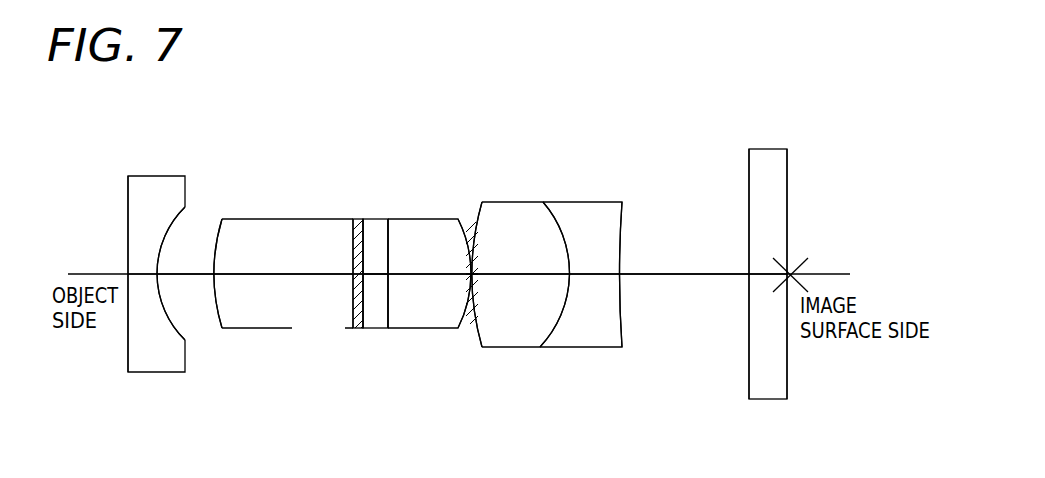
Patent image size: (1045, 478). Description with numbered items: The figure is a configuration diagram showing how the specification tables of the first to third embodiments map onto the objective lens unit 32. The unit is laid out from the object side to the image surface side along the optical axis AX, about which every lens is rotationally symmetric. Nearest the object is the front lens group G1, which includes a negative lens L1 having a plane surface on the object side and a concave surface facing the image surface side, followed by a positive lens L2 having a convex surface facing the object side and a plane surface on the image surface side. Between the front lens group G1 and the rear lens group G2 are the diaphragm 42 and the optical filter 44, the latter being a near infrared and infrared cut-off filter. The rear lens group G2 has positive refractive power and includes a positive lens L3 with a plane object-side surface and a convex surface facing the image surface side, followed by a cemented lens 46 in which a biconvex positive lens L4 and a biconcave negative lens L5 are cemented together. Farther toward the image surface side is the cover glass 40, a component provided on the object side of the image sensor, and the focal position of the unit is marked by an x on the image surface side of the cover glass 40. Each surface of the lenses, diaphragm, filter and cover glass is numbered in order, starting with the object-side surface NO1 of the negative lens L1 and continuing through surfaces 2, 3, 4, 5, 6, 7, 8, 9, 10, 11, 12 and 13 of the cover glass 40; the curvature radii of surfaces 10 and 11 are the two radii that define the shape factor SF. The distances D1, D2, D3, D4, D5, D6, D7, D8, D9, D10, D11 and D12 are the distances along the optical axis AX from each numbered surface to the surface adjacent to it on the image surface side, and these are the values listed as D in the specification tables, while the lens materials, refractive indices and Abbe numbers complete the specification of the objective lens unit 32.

The objective lens unit 32 is at (603, 107).
The cover glass 40 is at (765, 149).
The diaphragm 42 is at (356, 219).
The optical filter 44 is at (386, 219).
The cemented lens 46 is at (554, 257).
The negative lens L1 is at (153, 176).
The positive lens L2 is at (282, 219).
The positive lens L3 is at (431, 219).
The positive lens L4 is at (512, 202).
The negative lens L5 is at (583, 202).
The front lens group G1 is at (214, 285).
The rear lens group G2 is at (483, 278).
The optical axis AX is at (830, 273).
The surface number 1 NO1 is at (128, 367).
The surface number 2 is at (188, 340).
The surface number 3 is at (222, 315).
The surface number 4 is at (355, 328).
The surface number 5 is at (360, 328).
The surface number 6 is at (384, 328).
The surface number 7 is at (389, 328).
The surface number 8 is at (462, 328).
The surface number 9 is at (481, 347).
The surface number 10 is at (538, 347).
The surface number 11 is at (627, 307).
The surface number 12 is at (747, 384).
The surface number 13 is at (788, 384).
The distance D1 is at (143, 273).
The distance D2 is at (188, 273).
The distance D3 is at (283, 273).
The distance D4 is at (351, 273).
The distance D5 is at (370, 273).
The distance D6 is at (375, 273).
The distance D7 is at (422, 273).
The distance D8 is at (472, 273).
The distance D9 is at (522, 273).
The distance D10 is at (583, 273).
The distance D11 is at (668, 273).
The distance D12 is at (767, 273).